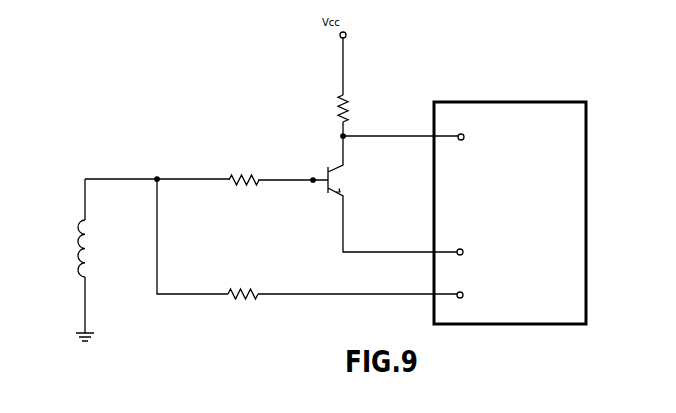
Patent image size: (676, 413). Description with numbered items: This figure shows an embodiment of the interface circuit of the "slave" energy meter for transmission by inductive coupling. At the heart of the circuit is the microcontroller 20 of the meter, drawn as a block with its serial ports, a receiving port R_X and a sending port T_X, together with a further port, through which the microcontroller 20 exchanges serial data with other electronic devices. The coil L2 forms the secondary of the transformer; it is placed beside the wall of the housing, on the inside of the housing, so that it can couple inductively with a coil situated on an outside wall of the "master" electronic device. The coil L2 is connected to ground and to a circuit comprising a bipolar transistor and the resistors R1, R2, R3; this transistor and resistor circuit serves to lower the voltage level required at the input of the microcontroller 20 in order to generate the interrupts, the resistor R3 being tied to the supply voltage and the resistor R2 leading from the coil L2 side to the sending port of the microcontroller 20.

The microcontroller 20 is at (503, 324).
The base resistor R1 is at (244, 170).
The transmit resistor R2 is at (243, 285).
The pull-up resistor R3 is at (330, 108).
The coil L2 is at (74, 260).